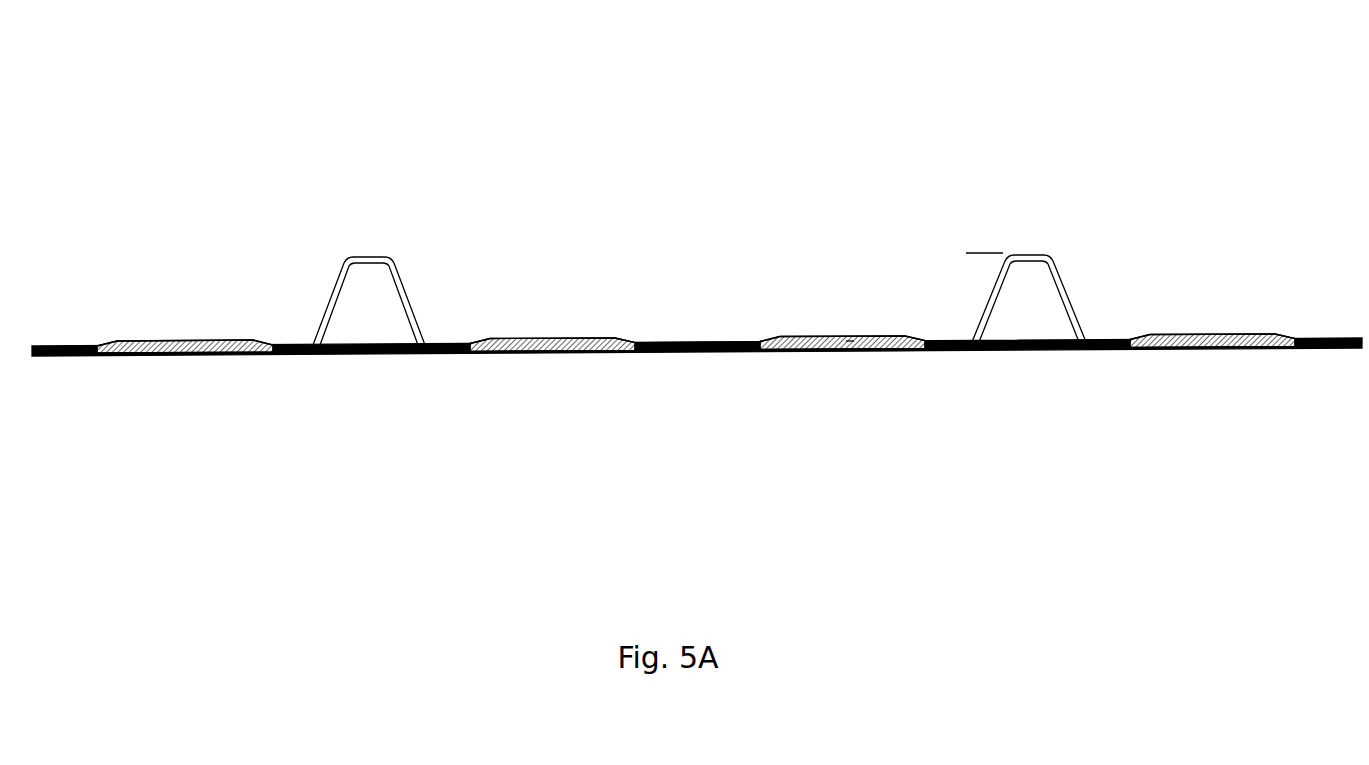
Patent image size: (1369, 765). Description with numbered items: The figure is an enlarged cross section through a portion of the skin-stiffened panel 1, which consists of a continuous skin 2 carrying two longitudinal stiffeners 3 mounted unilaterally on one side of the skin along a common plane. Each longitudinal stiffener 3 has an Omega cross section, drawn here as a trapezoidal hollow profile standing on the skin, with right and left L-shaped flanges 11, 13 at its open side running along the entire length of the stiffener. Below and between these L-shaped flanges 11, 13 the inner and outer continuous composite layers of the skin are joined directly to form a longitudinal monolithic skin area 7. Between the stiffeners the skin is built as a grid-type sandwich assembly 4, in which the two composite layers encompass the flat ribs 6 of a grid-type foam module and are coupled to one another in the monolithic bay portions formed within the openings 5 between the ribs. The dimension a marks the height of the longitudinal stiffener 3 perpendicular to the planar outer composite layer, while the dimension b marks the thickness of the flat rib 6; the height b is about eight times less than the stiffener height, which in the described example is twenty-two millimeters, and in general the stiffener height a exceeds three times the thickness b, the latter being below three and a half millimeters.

The skin-stiffened panel 1 is at (212, 169).
The continuous skin 2 is at (71, 364).
The longitudinal stiffener 3 is at (384, 244).
The grid-type sandwich assembly 4 is at (460, 393).
The opening 5 is at (720, 340).
The flat rib 6 is at (558, 334).
The longitudinal monolithic skin area 7 is at (374, 365).
The L-shaped flange 11 is at (450, 334).
The L-shaped flange 13 is at (303, 365).
The height of the longitudinal stiffeners a is at (981, 355).
The thickness of the foam module b is at (850, 355).